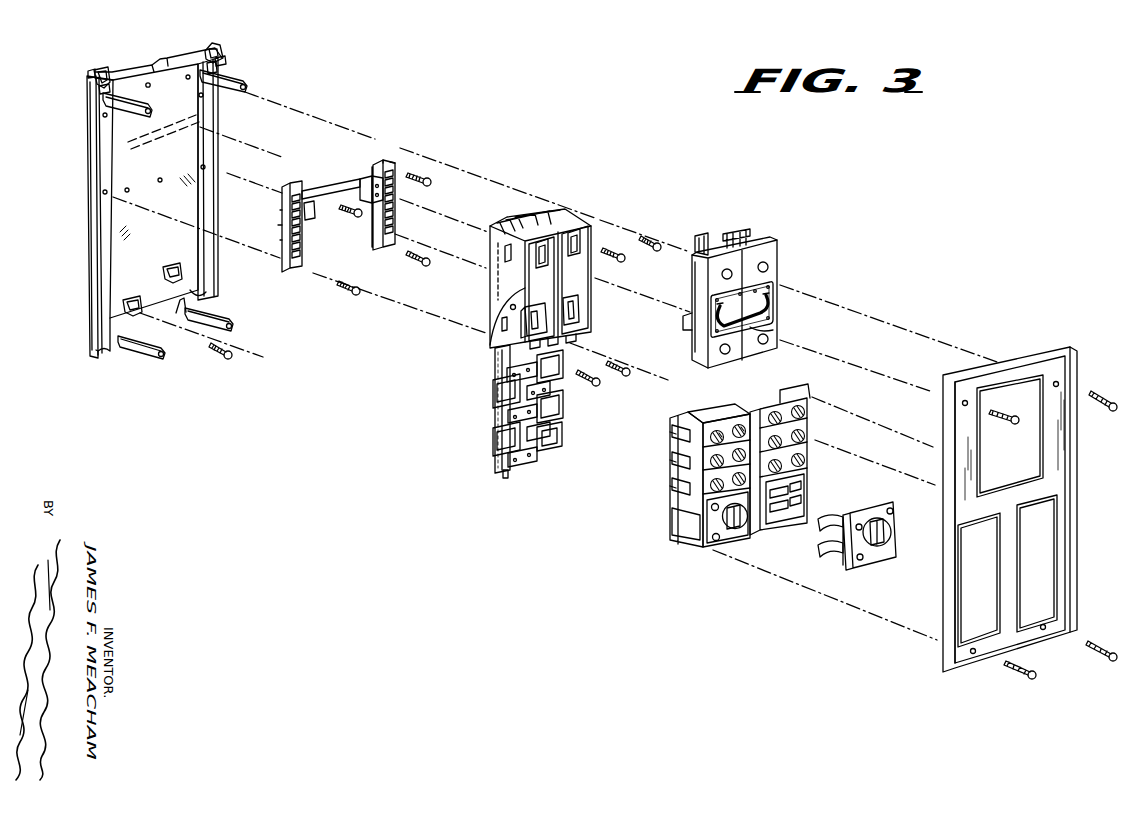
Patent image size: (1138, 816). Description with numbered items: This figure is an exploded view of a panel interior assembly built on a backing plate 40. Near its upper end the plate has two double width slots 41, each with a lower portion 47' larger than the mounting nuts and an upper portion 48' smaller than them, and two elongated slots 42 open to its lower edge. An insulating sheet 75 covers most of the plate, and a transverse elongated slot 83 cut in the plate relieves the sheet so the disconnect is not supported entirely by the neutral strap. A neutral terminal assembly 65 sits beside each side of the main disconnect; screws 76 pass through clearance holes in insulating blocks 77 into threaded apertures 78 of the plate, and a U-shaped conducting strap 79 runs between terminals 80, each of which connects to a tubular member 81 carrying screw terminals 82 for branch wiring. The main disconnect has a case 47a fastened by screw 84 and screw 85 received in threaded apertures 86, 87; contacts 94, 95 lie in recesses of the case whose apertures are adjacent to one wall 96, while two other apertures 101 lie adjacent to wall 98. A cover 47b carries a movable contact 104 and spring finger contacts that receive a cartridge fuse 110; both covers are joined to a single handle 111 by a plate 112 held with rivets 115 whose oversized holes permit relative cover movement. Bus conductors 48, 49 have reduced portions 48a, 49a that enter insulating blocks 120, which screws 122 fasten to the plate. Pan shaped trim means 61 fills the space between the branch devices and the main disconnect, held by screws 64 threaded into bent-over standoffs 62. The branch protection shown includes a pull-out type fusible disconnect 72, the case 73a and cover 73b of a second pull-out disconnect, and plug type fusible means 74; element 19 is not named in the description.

The terminal block 19 is at (808, 451).
The backing plate 40 is at (130, 70).
The double width slots 41 is at (217, 58).
The elongated slots 42 is at (213, 308).
The lower portions of slots 41 47' is at (155, 78).
The case 47a is at (539, 268).
The cover 47b is at (743, 286).
The bus conductor 48 is at (522, 429).
The upper portions of slots 41 48' is at (165, 52).
The reduced portion 48a is at (513, 477).
The bus conductor 49 is at (557, 420).
The reduced portion 49a is at (548, 447).
The trim means 61 is at (1080, 485).
The standoffs 62 is at (152, 363).
The screws 64 is at (1017, 675).
The neutral terminal assembly 65 is at (345, 199).
The pull-out type fusible disconnect 72 is at (703, 494).
The case 73a is at (824, 469).
The cover 73b is at (878, 567).
The plug type fusible means 74 is at (692, 406).
The insulating sheet 75 is at (110, 252).
The screws 76 is at (340, 295).
The insulating blocks 77 is at (305, 260).
The threaded apertures 78 is at (107, 190).
The U-shaped conducting strap 79 is at (327, 188).
The terminals 80 is at (311, 221).
The tubular member 81 is at (398, 198).
The screw terminals 82 is at (397, 220).
The transverse elongated slot 83 is at (128, 138).
The screw 84 is at (590, 381).
The screw 85 is at (627, 259).
The threaded aperture 86 is at (157, 180).
The threaded aperture 87 is at (149, 83).
The contact 94 is at (577, 317).
The contact 95 is at (580, 242).
The wall 96 is at (539, 281).
The wall 98 is at (525, 283).
The apertures 101 is at (502, 327).
The movable contact 104 is at (705, 236).
The cartridge fuse 110 is at (688, 300).
The handle 111 is at (777, 323).
The plate 112 is at (773, 293).
The rivets 115 is at (777, 310).
The insulating blocks 120 is at (133, 290).
The screws 122 is at (232, 357).